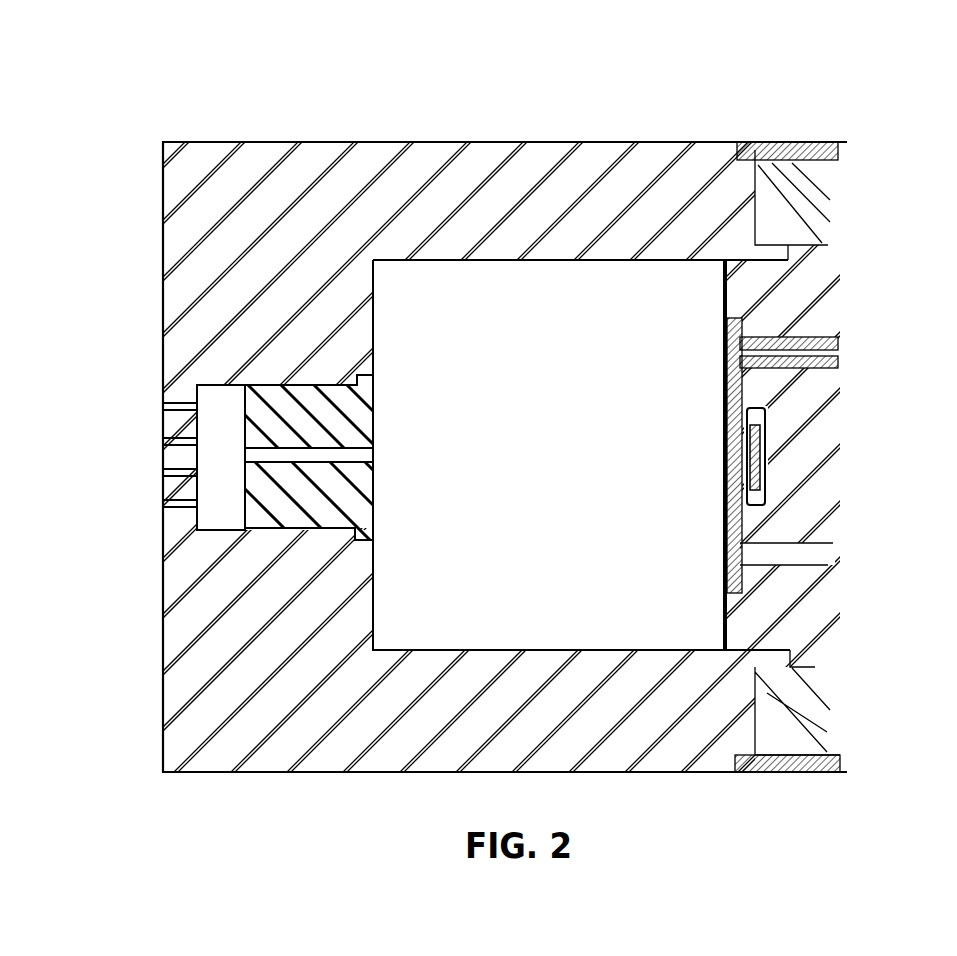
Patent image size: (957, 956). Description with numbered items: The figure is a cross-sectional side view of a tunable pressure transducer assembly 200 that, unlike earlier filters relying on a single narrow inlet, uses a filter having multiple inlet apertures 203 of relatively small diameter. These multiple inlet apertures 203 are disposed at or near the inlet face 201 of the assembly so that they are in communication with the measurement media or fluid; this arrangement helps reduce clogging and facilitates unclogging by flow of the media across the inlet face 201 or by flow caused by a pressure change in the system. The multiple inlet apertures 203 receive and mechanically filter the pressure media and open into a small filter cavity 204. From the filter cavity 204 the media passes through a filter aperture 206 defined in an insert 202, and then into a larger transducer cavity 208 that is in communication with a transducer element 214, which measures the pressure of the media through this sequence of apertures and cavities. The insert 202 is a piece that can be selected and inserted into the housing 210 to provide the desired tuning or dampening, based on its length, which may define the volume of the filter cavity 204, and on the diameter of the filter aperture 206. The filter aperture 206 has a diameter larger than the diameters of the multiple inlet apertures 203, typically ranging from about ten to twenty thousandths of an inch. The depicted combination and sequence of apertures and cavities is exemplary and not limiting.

The tunable pressure transducer assembly 200 is at (477, 60).
The inlet face 201 is at (107, 426).
The insert 202 is at (322, 397).
The multiple inlet apertures 203 is at (163, 503).
The filter cavity 204 is at (218, 486).
The filter aperture 206 is at (376, 454).
The transducer cavity 208 is at (570, 472).
The housing 210 is at (642, 168).
The transducer element 214 is at (758, 461).